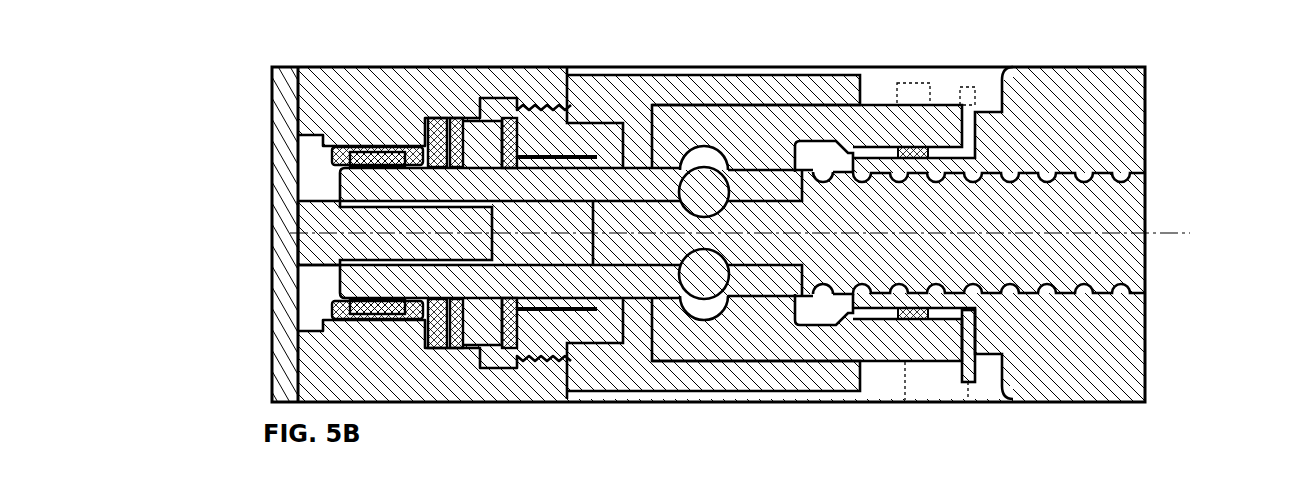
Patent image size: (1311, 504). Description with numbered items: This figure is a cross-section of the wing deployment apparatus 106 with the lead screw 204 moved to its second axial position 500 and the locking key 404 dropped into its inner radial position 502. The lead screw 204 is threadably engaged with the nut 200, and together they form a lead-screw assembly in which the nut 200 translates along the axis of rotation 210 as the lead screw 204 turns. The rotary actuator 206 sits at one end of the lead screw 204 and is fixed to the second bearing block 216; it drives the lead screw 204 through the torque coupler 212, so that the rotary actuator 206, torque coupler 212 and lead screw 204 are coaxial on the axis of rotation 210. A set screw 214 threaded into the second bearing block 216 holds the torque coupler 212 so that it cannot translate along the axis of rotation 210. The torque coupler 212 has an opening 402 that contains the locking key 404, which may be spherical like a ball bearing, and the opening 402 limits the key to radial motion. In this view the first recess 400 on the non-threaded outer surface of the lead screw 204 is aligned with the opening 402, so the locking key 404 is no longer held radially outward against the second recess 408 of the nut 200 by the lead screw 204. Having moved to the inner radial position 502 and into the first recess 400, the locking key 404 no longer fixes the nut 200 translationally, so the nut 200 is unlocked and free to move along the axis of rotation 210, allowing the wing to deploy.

The wing deployment apparatus 106 is at (263, 44).
The nut 200 is at (882, 135).
The lead screw 204 is at (1115, 257).
The rotary actuator 206 is at (305, 216).
The axis of rotation 210 is at (1178, 233).
The torque coupler 212 is at (657, 183).
The set screw 214 is at (597, 135).
The second bearing block 216 is at (505, 78).
The first recess 400 is at (745, 240).
The opening 402 is at (730, 197).
The locking key 404 is at (708, 182).
The second recess 408 is at (730, 163).
The second axial position 500 is at (563, 216).
The inner radial position 502 is at (665, 216).